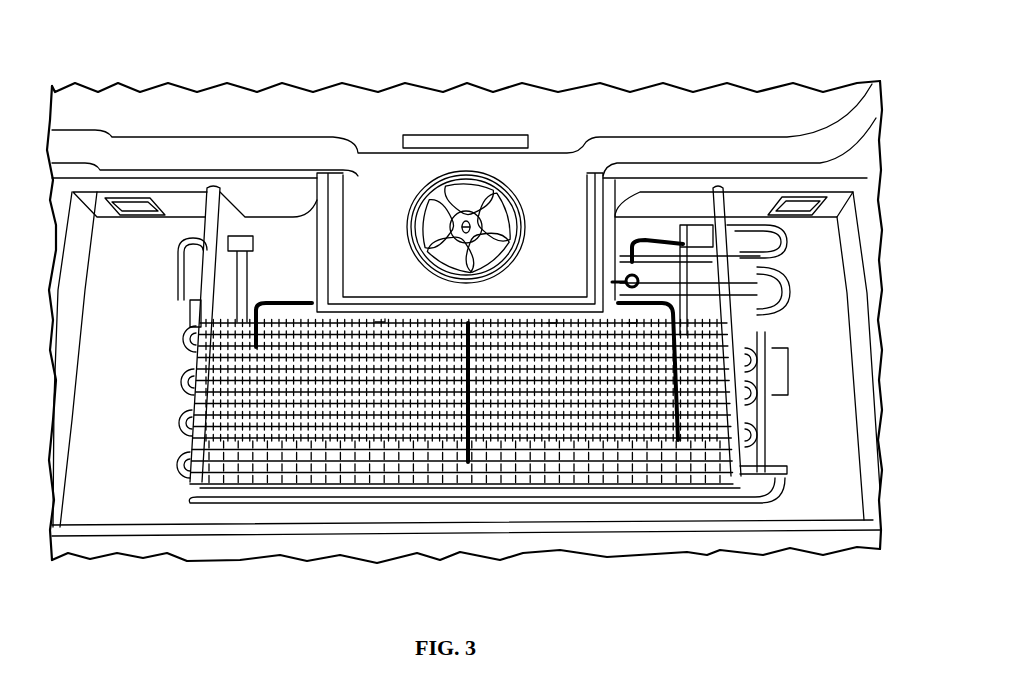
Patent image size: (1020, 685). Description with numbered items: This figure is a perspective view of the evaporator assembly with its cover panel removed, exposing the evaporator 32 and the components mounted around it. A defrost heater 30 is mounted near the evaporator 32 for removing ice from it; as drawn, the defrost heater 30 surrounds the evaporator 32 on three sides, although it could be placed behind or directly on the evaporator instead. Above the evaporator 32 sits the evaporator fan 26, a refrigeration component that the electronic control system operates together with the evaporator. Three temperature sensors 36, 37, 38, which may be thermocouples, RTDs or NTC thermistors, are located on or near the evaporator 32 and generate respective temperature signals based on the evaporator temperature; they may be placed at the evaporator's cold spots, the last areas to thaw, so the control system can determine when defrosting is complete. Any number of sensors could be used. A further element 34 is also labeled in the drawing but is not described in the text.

The evaporator fan 26 is at (470, 226).
The defrost heater 30 is at (538, 498).
The evaporator 32 is at (178, 482).
The evaporator temperature sensor 34 is at (650, 243).
The temperature sensor 36 is at (257, 307).
The temperature sensor 37 is at (665, 300).
The temperature sensor 38 is at (468, 463).